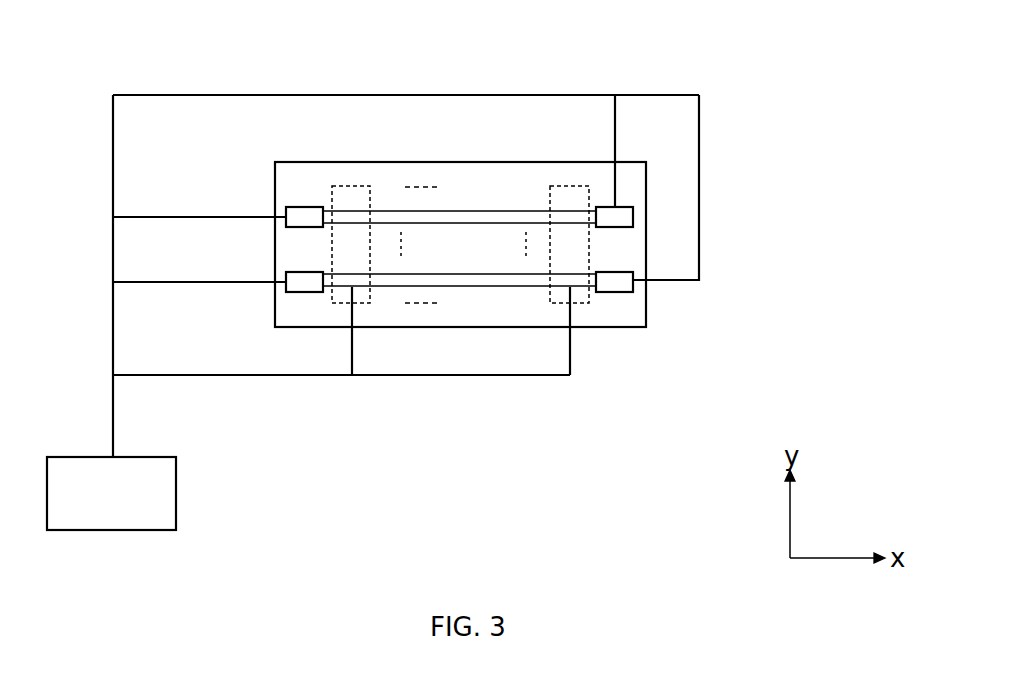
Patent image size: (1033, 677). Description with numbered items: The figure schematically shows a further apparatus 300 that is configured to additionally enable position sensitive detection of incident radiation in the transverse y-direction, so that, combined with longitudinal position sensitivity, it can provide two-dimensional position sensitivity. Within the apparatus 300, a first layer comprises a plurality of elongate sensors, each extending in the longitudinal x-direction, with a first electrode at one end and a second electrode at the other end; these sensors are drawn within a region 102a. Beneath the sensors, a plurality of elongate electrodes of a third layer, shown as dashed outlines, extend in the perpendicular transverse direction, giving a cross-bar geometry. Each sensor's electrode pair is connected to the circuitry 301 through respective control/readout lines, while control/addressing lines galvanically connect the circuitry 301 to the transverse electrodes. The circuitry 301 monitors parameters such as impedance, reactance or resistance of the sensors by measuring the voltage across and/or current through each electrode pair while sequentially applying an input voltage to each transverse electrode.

The apparatus 300 is at (822, 78).
The circuitry 301 is at (163, 486).
The substrate region 102a is at (627, 307).